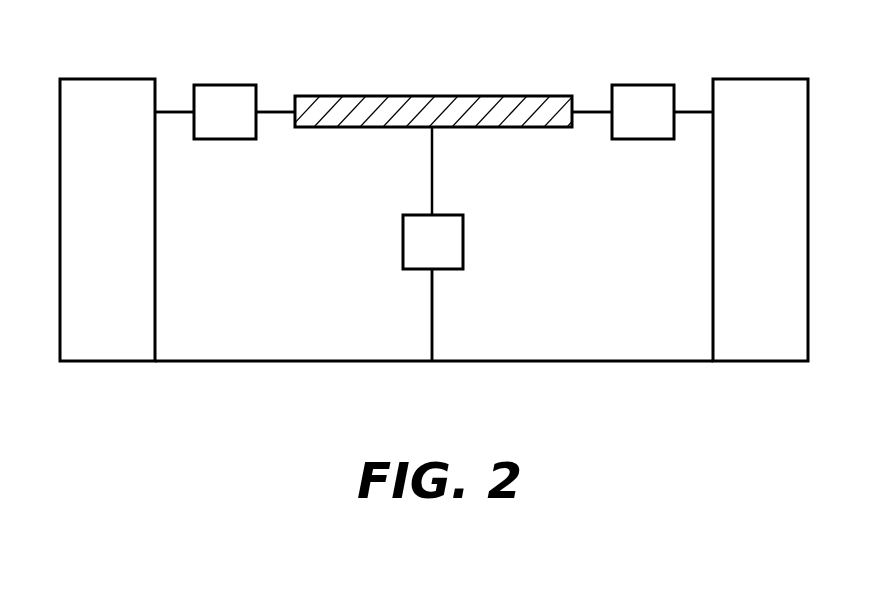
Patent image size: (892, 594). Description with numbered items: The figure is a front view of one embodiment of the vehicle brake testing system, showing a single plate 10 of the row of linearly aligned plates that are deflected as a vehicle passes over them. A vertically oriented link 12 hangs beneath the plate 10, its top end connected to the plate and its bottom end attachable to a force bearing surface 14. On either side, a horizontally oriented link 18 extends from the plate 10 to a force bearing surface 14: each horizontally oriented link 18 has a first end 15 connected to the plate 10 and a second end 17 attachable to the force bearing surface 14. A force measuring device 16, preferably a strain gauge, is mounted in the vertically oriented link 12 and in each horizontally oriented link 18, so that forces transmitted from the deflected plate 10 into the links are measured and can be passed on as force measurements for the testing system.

The plate 10 is at (413, 95).
The vertically oriented link 12 is at (430, 315).
The force bearing surface 14 is at (92, 235).
The first end 15 is at (276, 105).
The force measuring device 16 is at (210, 125).
The second end 17 is at (694, 117).
The horizontally oriented link 18 is at (175, 114).